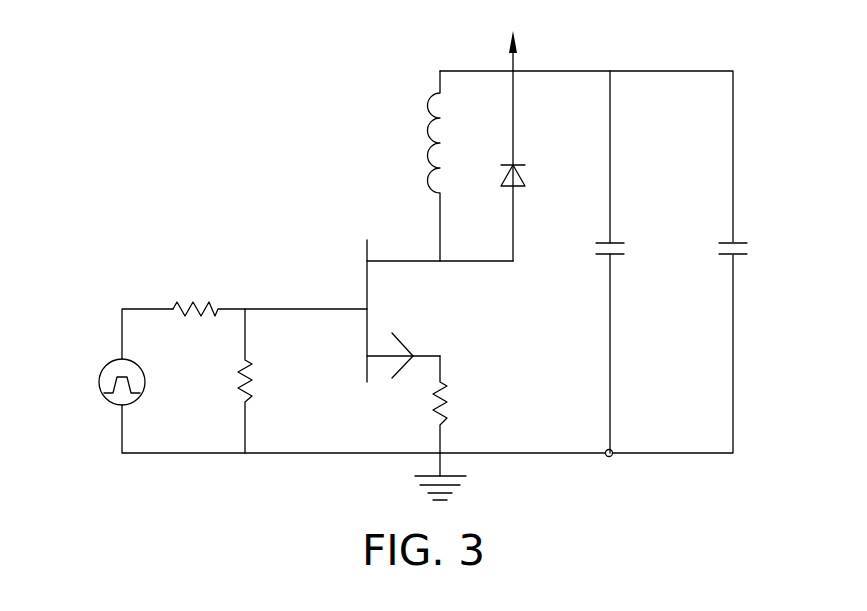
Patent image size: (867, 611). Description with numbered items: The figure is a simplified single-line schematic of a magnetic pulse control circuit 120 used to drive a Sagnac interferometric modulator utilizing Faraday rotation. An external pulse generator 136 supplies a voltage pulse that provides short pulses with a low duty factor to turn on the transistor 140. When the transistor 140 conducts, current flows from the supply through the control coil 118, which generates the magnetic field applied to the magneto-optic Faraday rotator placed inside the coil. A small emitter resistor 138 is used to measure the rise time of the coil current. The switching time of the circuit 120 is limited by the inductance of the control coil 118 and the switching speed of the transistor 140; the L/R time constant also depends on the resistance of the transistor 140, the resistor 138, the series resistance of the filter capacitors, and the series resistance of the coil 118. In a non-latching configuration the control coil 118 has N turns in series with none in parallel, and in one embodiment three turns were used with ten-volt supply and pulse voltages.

The control coil 118 is at (432, 93).
The magnetic pulse control circuit 120 is at (232, 150).
The pulse generator 136 is at (100, 372).
The resistor R3 138 is at (445, 383).
The transistor 140 is at (366, 282).